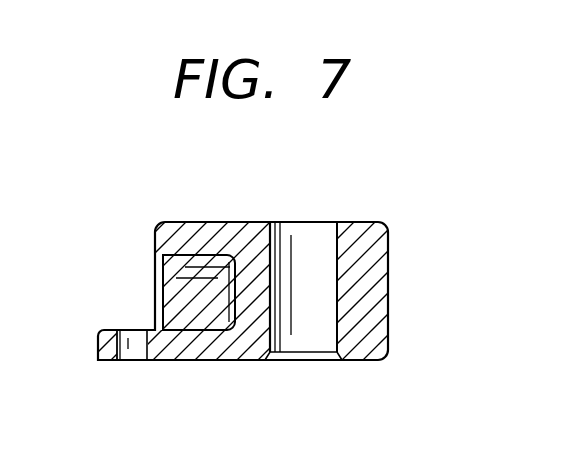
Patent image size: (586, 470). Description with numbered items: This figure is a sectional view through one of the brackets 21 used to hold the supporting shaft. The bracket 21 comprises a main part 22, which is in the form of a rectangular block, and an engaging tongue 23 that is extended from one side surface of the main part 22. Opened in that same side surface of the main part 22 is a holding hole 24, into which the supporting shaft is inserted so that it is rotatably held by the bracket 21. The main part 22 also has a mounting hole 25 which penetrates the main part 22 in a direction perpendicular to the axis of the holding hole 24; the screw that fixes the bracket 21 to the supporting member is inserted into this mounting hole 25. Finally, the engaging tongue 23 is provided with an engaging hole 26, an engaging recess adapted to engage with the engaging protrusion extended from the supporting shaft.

The bracket 21 is at (277, 276).
The main part 22 is at (386, 261).
The engaging tongue 23 is at (100, 352).
The holding hole 24 is at (176, 258).
The mounting hole 25 is at (338, 333).
The engaging hole 26 is at (136, 362).